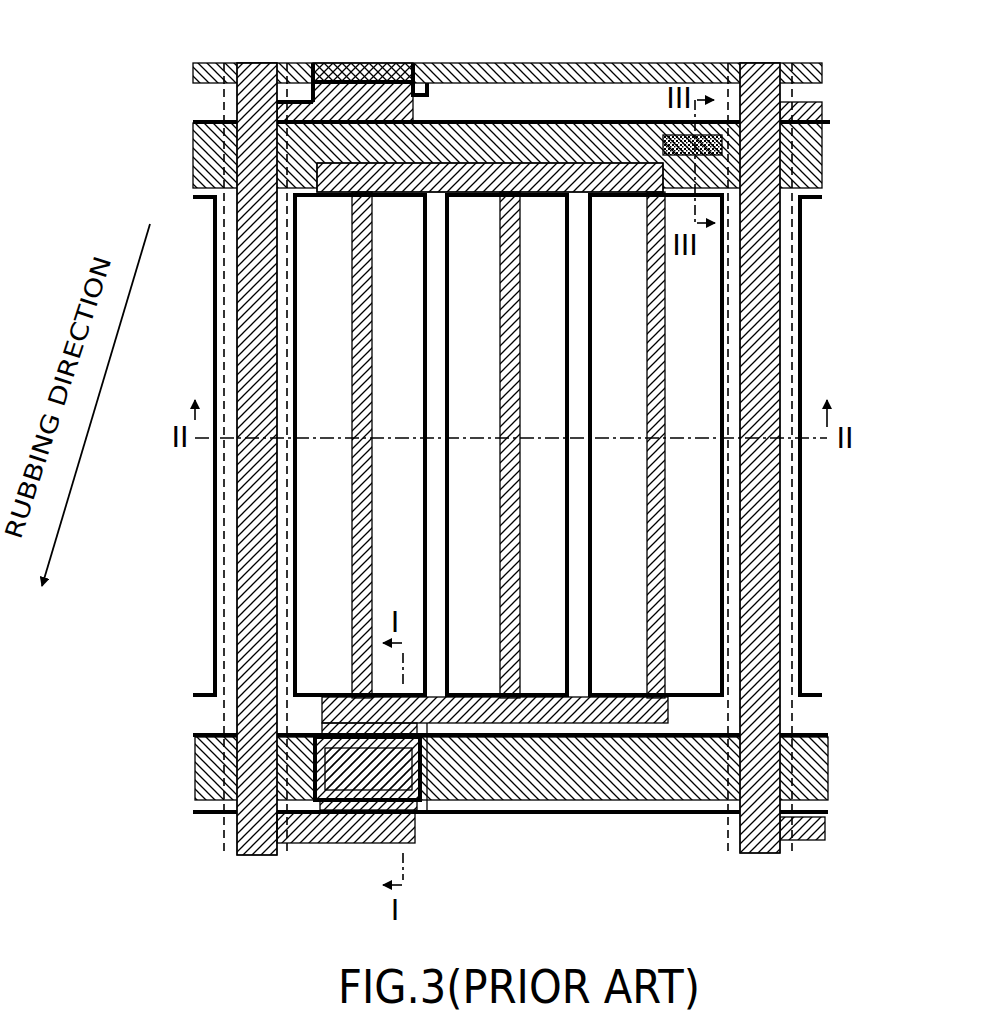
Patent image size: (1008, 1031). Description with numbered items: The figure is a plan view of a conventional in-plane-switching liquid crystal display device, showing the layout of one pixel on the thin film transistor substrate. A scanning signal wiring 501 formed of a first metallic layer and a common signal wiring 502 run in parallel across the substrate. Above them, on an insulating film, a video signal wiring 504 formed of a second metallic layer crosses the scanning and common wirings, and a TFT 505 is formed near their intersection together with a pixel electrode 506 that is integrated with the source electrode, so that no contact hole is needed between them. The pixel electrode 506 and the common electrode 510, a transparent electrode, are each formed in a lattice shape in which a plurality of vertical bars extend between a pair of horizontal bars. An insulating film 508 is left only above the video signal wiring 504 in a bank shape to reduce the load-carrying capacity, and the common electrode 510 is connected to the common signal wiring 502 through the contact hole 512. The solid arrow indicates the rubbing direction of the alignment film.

The scanning signal wiring 501 is at (195, 765).
The common signal wiring 502 is at (205, 152).
The video signal wiring 504 is at (250, 833).
The TFT 505 is at (337, 778).
The pixel electrode 506 is at (660, 575).
The insulating film 508 is at (218, 566).
The common electrode 510 is at (800, 261).
The contact hole 512 is at (770, 150).